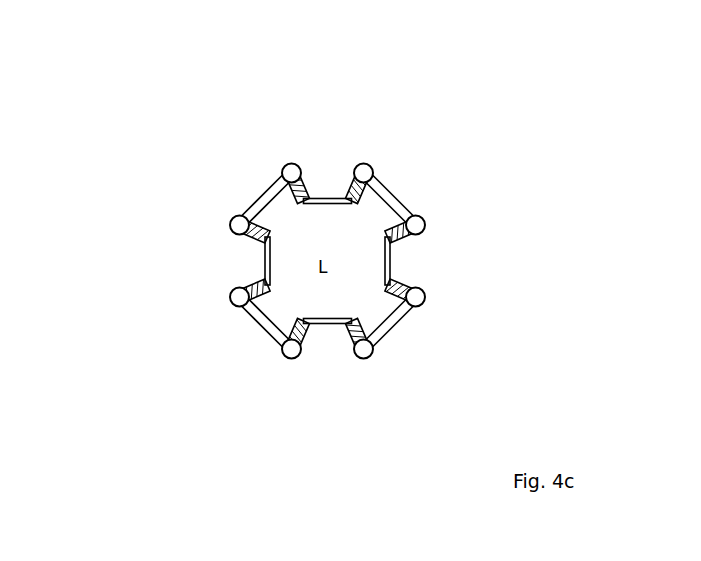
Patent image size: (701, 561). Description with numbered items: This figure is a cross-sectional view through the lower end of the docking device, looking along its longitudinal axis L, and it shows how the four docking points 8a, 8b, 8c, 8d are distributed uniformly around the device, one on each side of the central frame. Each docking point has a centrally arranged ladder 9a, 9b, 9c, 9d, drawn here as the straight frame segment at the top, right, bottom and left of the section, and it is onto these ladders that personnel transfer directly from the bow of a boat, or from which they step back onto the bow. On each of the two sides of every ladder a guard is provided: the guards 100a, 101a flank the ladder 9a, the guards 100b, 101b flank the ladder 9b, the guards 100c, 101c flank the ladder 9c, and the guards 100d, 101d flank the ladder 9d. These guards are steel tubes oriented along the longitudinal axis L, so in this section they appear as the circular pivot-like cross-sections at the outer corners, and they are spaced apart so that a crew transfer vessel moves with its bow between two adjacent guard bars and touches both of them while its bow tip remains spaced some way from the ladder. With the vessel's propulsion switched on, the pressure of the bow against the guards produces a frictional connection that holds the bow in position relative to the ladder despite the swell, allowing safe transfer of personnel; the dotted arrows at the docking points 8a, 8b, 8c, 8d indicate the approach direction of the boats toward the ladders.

The docking point 8a is at (323, 410).
The docking point 8b is at (472, 263).
The docking point 8c is at (324, 110).
The docking point 8d is at (148, 263).
The ladder 9a is at (322, 324).
The ladder 9b is at (392, 263).
The ladder 9c is at (327, 198).
The ladder 9d is at (265, 263).
The guard 100a is at (290, 361).
The guard 100b is at (427, 300).
The guard 100c is at (370, 162).
The guard 100d is at (229, 220).
The guard 101a is at (367, 360).
The guard 101b is at (425, 222).
The guard 101c is at (287, 160).
The guard 101d is at (226, 303).